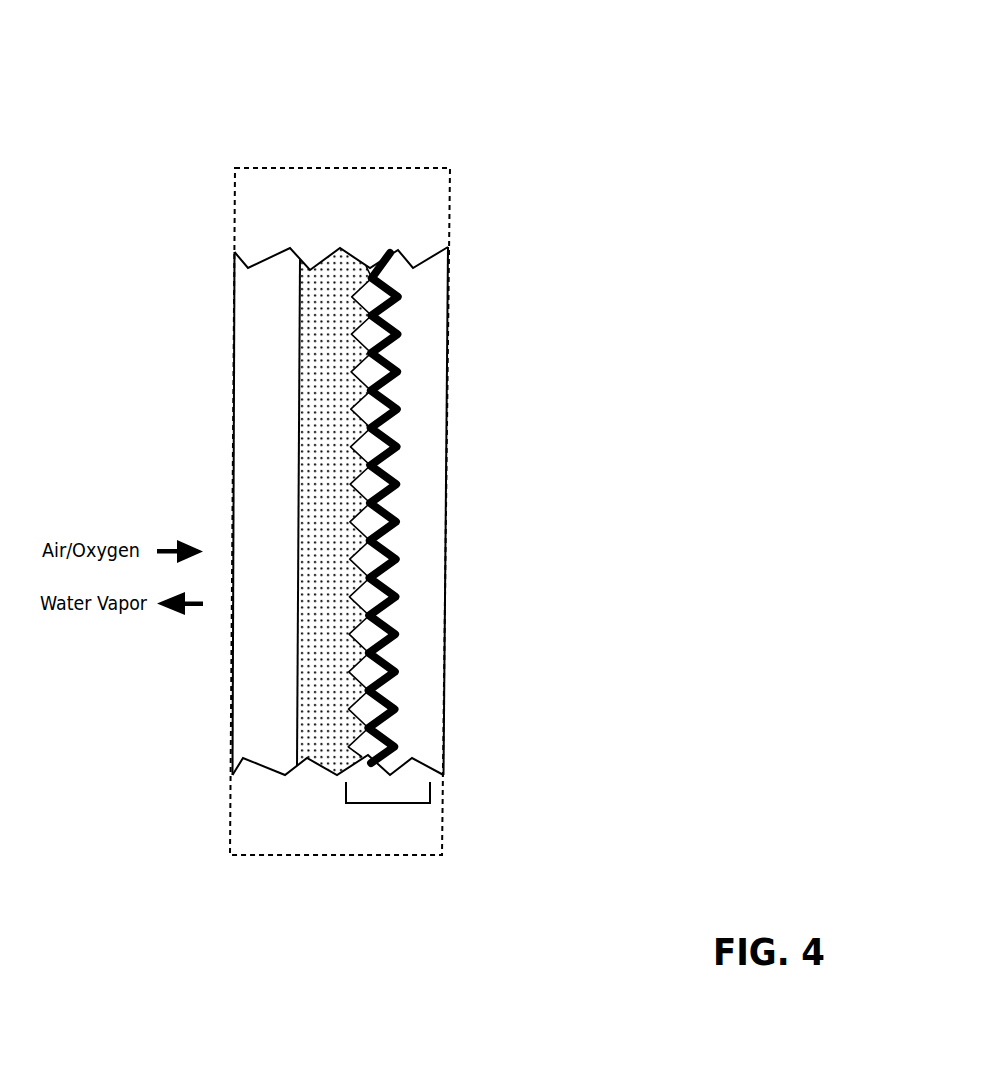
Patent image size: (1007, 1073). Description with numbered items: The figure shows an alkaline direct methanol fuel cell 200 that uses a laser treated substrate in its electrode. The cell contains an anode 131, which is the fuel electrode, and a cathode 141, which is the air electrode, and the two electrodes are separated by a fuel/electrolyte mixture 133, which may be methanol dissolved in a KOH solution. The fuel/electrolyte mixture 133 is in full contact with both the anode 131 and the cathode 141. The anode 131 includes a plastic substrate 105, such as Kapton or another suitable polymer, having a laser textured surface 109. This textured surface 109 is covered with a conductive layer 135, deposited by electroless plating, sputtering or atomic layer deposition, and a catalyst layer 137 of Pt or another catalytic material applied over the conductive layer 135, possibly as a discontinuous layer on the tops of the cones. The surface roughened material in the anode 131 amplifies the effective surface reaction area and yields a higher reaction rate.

The alkaline direct methanol fuel cell 200 is at (672, 31).
The cathode 141 is at (252, 280).
The fuel/electrolyte mixture 133 is at (340, 277).
The conductive layer 135 is at (362, 288).
The catalyst layer 137 is at (388, 257).
The laser textured surface 109 is at (400, 562).
The plastic substrate 105 is at (412, 650).
The anode 131 is at (380, 803).